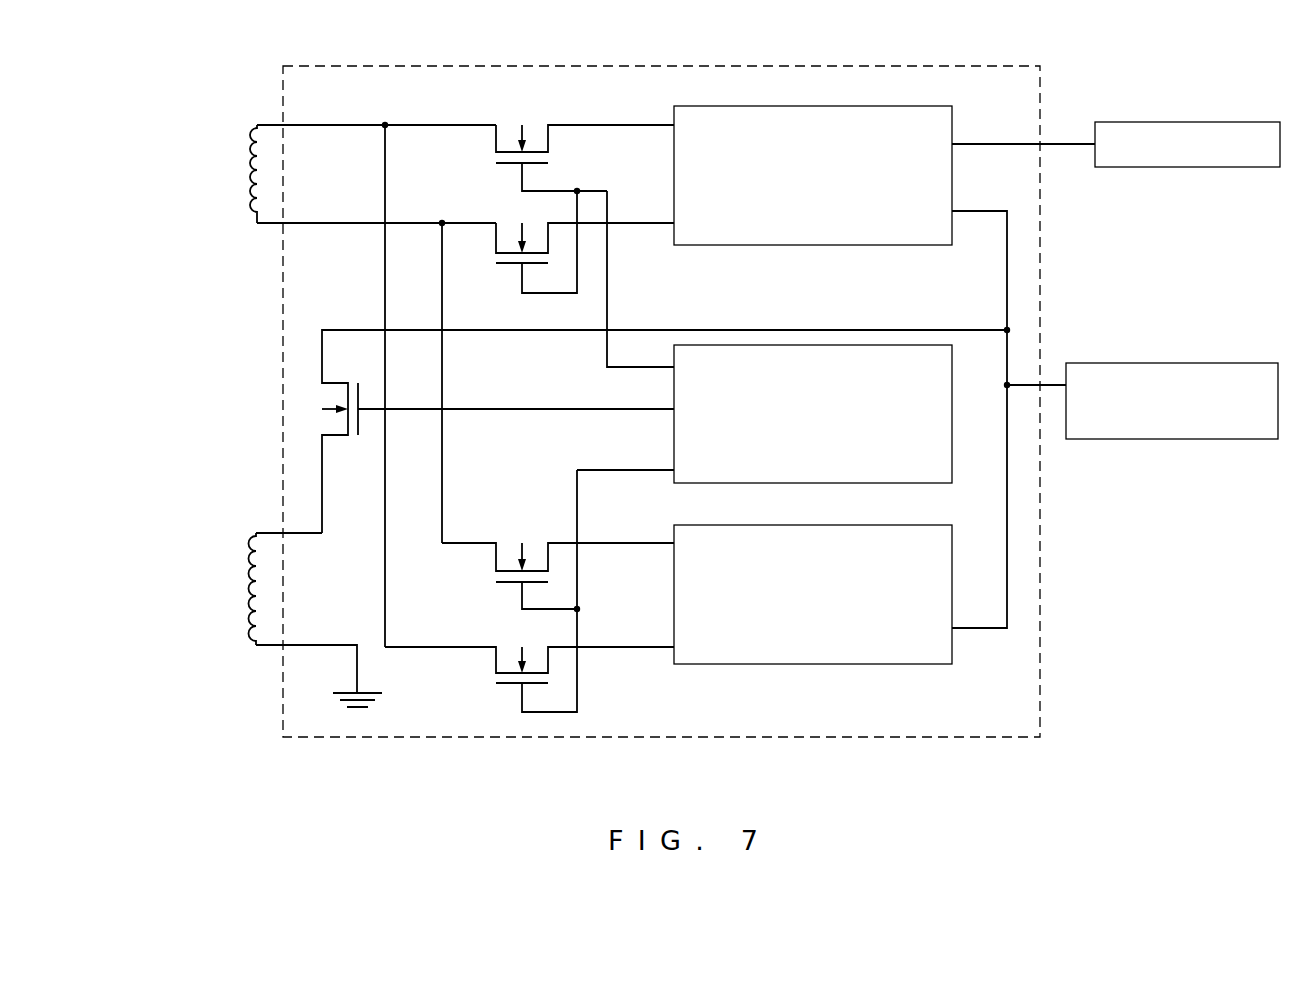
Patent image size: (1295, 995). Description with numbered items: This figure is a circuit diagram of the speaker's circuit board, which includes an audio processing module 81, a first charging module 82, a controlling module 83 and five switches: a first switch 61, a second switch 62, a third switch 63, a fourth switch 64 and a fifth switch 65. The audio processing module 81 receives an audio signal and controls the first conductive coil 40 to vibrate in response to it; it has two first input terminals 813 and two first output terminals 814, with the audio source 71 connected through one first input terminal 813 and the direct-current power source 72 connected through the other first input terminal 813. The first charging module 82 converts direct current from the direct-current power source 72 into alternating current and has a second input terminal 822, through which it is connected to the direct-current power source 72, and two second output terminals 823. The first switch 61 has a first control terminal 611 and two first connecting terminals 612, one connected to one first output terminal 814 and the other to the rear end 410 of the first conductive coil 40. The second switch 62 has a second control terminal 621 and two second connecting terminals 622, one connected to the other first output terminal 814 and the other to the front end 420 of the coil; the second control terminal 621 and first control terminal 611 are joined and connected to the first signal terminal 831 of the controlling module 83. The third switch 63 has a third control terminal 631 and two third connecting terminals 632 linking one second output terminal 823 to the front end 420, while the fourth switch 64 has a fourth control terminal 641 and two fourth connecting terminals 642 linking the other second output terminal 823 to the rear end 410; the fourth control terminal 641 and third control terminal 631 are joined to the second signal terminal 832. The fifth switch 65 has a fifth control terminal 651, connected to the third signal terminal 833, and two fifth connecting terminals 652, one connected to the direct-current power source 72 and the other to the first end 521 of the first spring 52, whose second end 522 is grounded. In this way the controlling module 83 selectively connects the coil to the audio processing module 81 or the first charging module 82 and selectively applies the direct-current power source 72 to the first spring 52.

The first conductive coil 40 is at (145, 125).
The rear end 410 is at (257, 125).
The front end 420 is at (257, 223).
The first spring 52 is at (134, 533).
The first end 521 is at (256, 533).
The second end 522 is at (256, 645).
The first switch 61 is at (559, 105).
The first control terminal 611 is at (537, 180).
The first connecting terminals 612 is at (559, 122).
The second switch 62 is at (444, 244).
The second control terminal 621 is at (522, 244).
The second connecting terminals 622 is at (560, 225).
The third switch 63 is at (519, 652).
The third control terminal 631 is at (526, 599).
The third connecting terminals 632 is at (558, 541).
The fourth switch 64 is at (529, 631).
The fourth control terminal 641 is at (507, 663).
The fourth connecting terminals 642 is at (529, 645).
The fifth switch 65 is at (611, 431).
The fifth control terminal 651 is at (372, 396).
The fifth connecting terminals 652 is at (648, 431).
The audio source 71 is at (1190, 122).
The direct-current power source 72 is at (1182, 363).
The audio processing module 81 is at (863, 360).
The first input terminals 813 is at (1057, 301).
The first output terminals 814 is at (645, 160).
The first charging module 82 is at (813, 646).
The second input terminal 822 is at (984, 650).
The second output terminals 823 is at (643, 577).
The controlling module 83 is at (731, 338).
The first signal terminal 831 is at (640, 280).
The second signal terminal 832 is at (625, 454).
The third signal terminal 833 is at (516, 393).